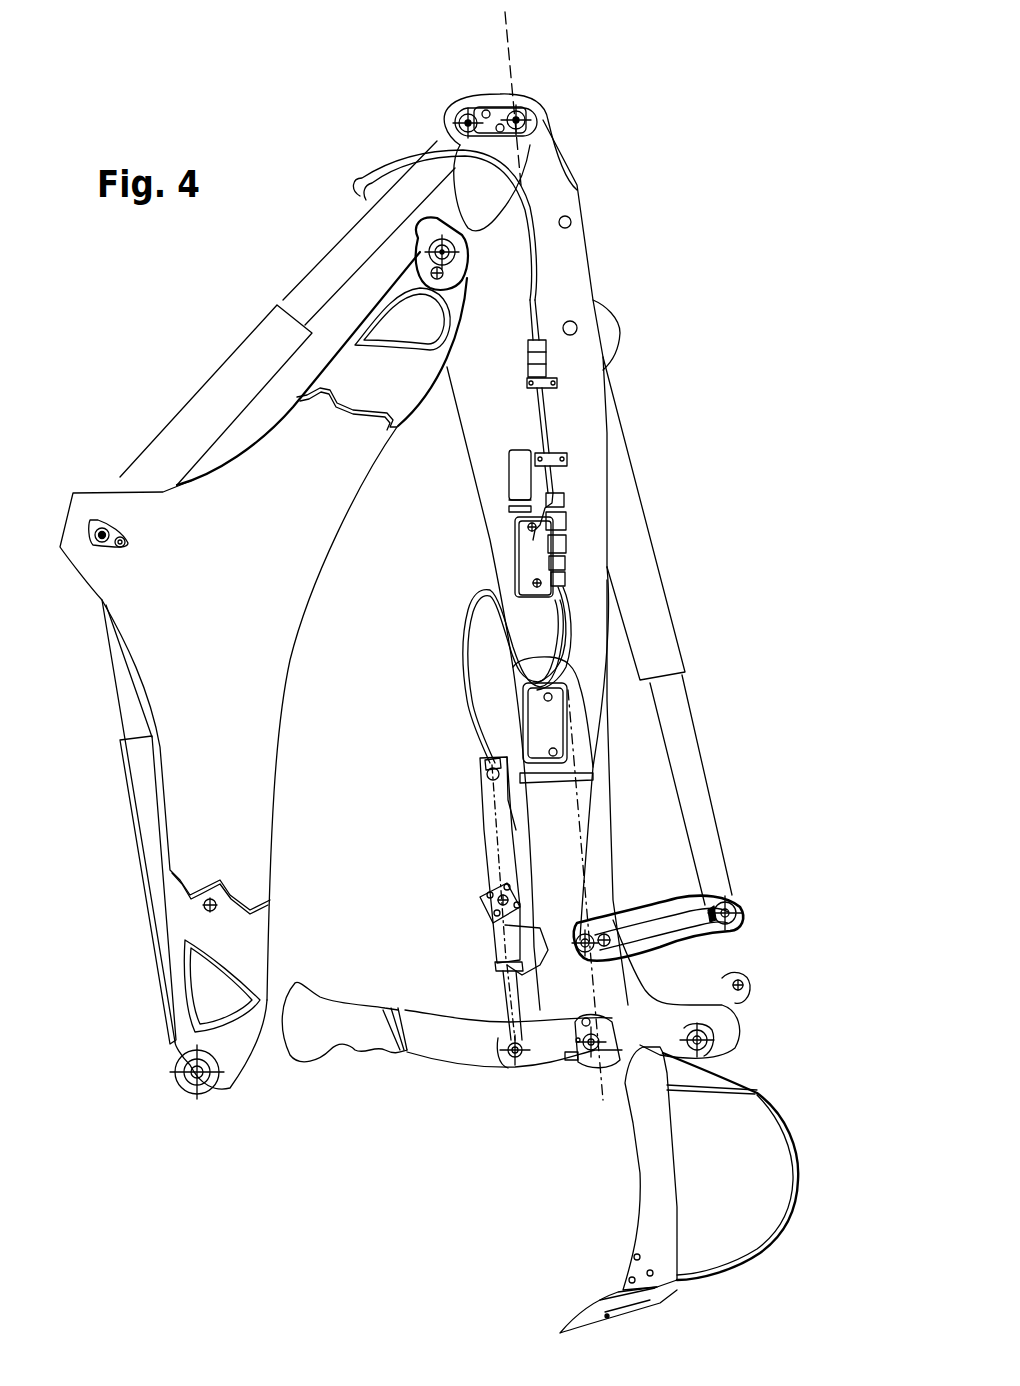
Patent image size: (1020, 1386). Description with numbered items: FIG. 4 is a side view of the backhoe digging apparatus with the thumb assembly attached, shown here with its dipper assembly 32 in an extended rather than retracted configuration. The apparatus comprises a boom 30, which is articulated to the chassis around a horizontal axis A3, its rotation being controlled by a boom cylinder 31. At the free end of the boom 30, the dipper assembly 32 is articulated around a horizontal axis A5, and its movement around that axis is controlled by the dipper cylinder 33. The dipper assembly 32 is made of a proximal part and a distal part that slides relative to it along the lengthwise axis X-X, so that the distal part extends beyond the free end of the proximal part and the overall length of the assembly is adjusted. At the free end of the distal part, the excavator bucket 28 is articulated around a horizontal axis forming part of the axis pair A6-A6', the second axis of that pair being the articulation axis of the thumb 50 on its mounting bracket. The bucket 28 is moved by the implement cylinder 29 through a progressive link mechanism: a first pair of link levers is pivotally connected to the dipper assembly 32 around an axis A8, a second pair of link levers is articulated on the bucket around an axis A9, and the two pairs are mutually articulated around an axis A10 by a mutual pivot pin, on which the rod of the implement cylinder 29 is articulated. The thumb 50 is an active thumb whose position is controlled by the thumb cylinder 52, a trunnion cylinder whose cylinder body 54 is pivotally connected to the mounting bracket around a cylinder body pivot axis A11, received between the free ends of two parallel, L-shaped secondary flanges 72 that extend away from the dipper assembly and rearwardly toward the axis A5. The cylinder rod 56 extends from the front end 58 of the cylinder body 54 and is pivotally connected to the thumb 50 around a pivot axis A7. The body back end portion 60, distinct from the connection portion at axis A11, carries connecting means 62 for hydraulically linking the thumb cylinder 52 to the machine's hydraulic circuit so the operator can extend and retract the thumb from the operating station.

The lengthwise axis X-X is at (513, 36).
The excavator bucket 28 is at (800, 1133).
The implement cylinder 29 is at (630, 548).
The boom 30 is at (180, 652).
The boom cylinder 31 is at (122, 785).
The dipper assembly 32 is at (605, 178).
The dipper cylinder 33 is at (195, 422).
The thumb 50 is at (426, 1080).
The thumb cylinder 52 is at (465, 815).
The cylinder body 54 is at (488, 830).
The cylinder rod 56 is at (505, 1003).
The front end 58 is at (498, 968).
The body back end portion 60 is at (478, 738).
The connecting means 62 is at (490, 780).
The secondary flanges 72 is at (532, 937).
The horizontal axis A3 is at (190, 1090).
The horizontal axis A5 is at (428, 246).
The bucket articulation axis and thumb articulation axis A6-A6' is at (561, 1069).
The pivot axis A7 is at (508, 1057).
The axis A8 is at (588, 936).
The axis A9 is at (715, 1048).
The axis A10 is at (745, 912).
The cylinder body pivot axis A11 is at (482, 908).